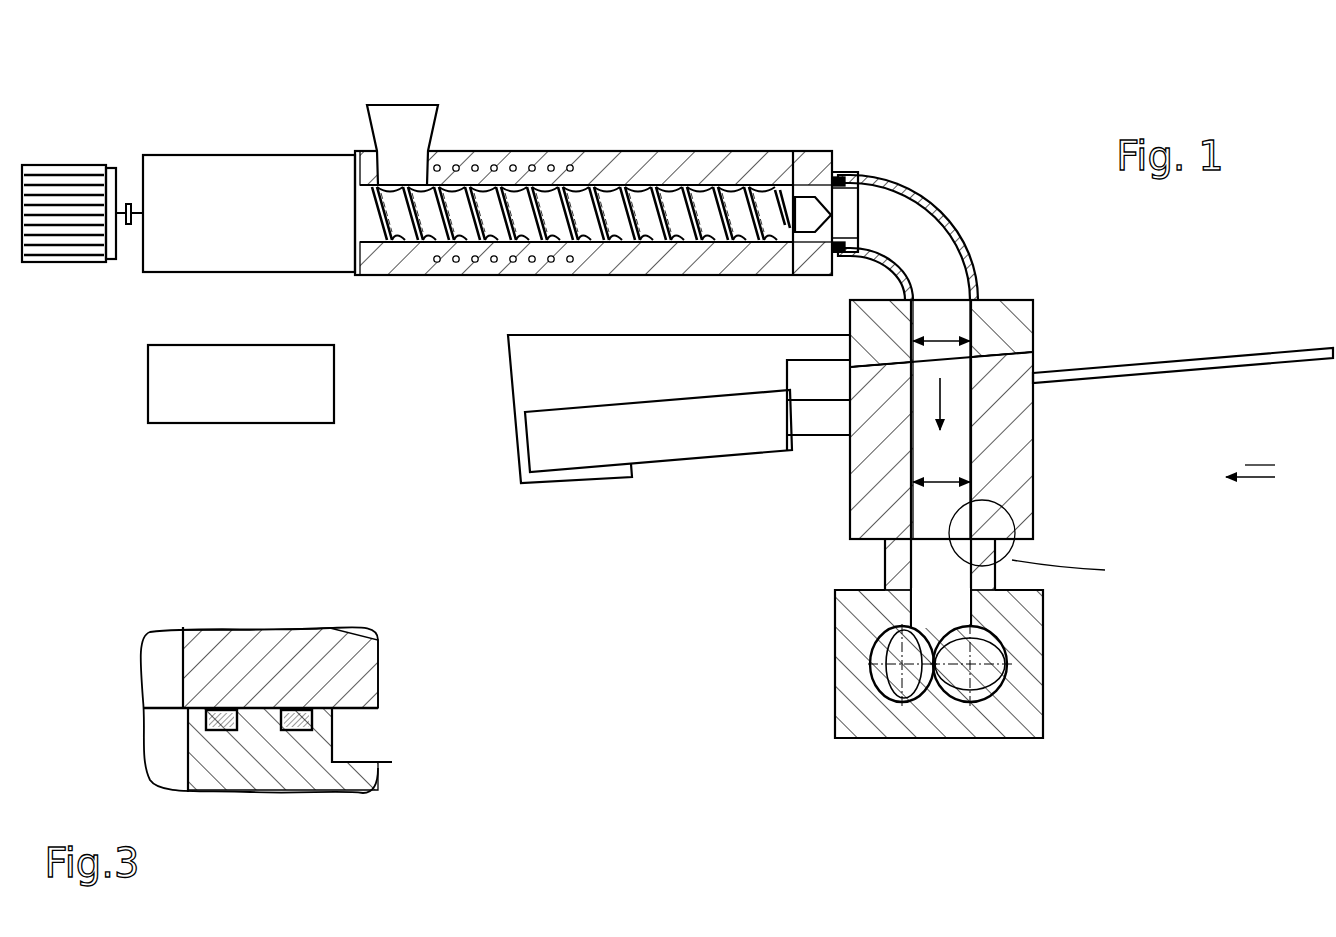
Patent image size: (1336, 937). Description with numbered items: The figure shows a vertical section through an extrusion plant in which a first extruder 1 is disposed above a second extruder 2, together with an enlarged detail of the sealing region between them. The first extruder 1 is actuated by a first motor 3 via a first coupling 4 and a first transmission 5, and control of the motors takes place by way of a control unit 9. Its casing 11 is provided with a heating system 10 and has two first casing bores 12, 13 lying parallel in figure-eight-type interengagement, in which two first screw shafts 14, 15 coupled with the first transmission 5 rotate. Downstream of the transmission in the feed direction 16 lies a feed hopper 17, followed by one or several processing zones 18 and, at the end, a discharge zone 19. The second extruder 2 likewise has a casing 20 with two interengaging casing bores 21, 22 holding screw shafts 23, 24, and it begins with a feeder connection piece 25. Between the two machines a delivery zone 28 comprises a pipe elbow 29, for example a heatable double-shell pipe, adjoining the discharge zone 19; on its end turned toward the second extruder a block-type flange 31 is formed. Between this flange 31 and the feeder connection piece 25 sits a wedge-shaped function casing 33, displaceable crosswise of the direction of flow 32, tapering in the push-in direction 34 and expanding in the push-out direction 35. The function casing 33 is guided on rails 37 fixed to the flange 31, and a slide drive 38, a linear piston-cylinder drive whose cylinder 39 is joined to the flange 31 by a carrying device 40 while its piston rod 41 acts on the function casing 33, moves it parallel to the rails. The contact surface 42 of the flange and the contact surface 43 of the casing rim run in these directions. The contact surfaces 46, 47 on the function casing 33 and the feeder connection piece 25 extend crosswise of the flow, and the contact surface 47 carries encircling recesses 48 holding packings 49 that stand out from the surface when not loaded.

In FIG. 1, the first extruder 1 is at (606, 177).
In FIG. 1, the second extruder 2 is at (923, 703).
In FIG. 1, the first motor 3 is at (73, 168).
In FIG. 1, the first coupling 4 is at (127, 210).
In FIG. 1, the first transmission 5 is at (252, 172).
In FIG. 1, the control unit 9 is at (152, 392).
In FIG. 1, the heating system 10 is at (476, 163).
In FIG. 1, the casing 11 is at (748, 150).
In FIG. 1, the first casing bore 12 is at (598, 260).
In FIG. 1, the first casing bore 13 is at (545, 246).
In FIG. 1, the first screw shaft 14 is at (400, 236).
In FIG. 1, the first screw shaft 15 is at (432, 317).
In FIG. 1, the feed direction 16 is at (585, 141).
In FIG. 1, the feed hopper 17 is at (381, 103).
In FIG. 1, the processing zone 18 is at (793, 143).
In FIG. 1, the discharge zone 19 is at (802, 190).
In FIG. 1, the casing 20 is at (835, 690).
In FIG. 1, the casing bore 21 is at (872, 655).
In FIG. 1, the casing bore 22 is at (995, 692).
In FIG. 1, the screw shaft 23 is at (918, 693).
In FIG. 1, the screw shaft 24 is at (1005, 642).
In FIG. 1, the feeder connection piece 25 is at (884, 583).
In FIG. 3, the feeder connection piece 25 is at (269, 767).
In FIG. 1, the delivery zone 28 is at (1017, 354).
In FIG. 1, the pipe elbow 29 is at (950, 200).
In FIG. 1, the flange 31 is at (1040, 312).
In FIG. 1, the direction of flow 32 is at (947, 405).
In FIG. 1, the function casing 33 is at (1038, 483).
In FIG. 3, the function casing 33 is at (276, 641).
In FIG. 1, the push-in direction 34 is at (1129, 350).
In FIG. 1, the push-out direction 35 is at (1177, 349).
In FIG. 1, the rails 37 is at (1180, 371).
In FIG. 1, the slide drive 38 is at (682, 461).
In FIG. 1, the cylinder 39 is at (605, 448).
In FIG. 1, the carrying device 40 is at (522, 390).
In FIG. 1, the piston rod 41 is at (825, 420).
In FIG. 1, the contact surface 42 is at (888, 352).
In FIG. 1, the contact surface 43 is at (1030, 358).
In FIG. 1, the contact surface 46 is at (906, 541).
In FIG. 3, the contact surface 46 is at (250, 702).
In FIG. 1, the contact surface 47 is at (886, 561).
In FIG. 3, the contact surface 47 is at (314, 712).
In FIG. 3, the recesses 48 is at (204, 740).
In FIG. 3, the packings 49 is at (206, 723).